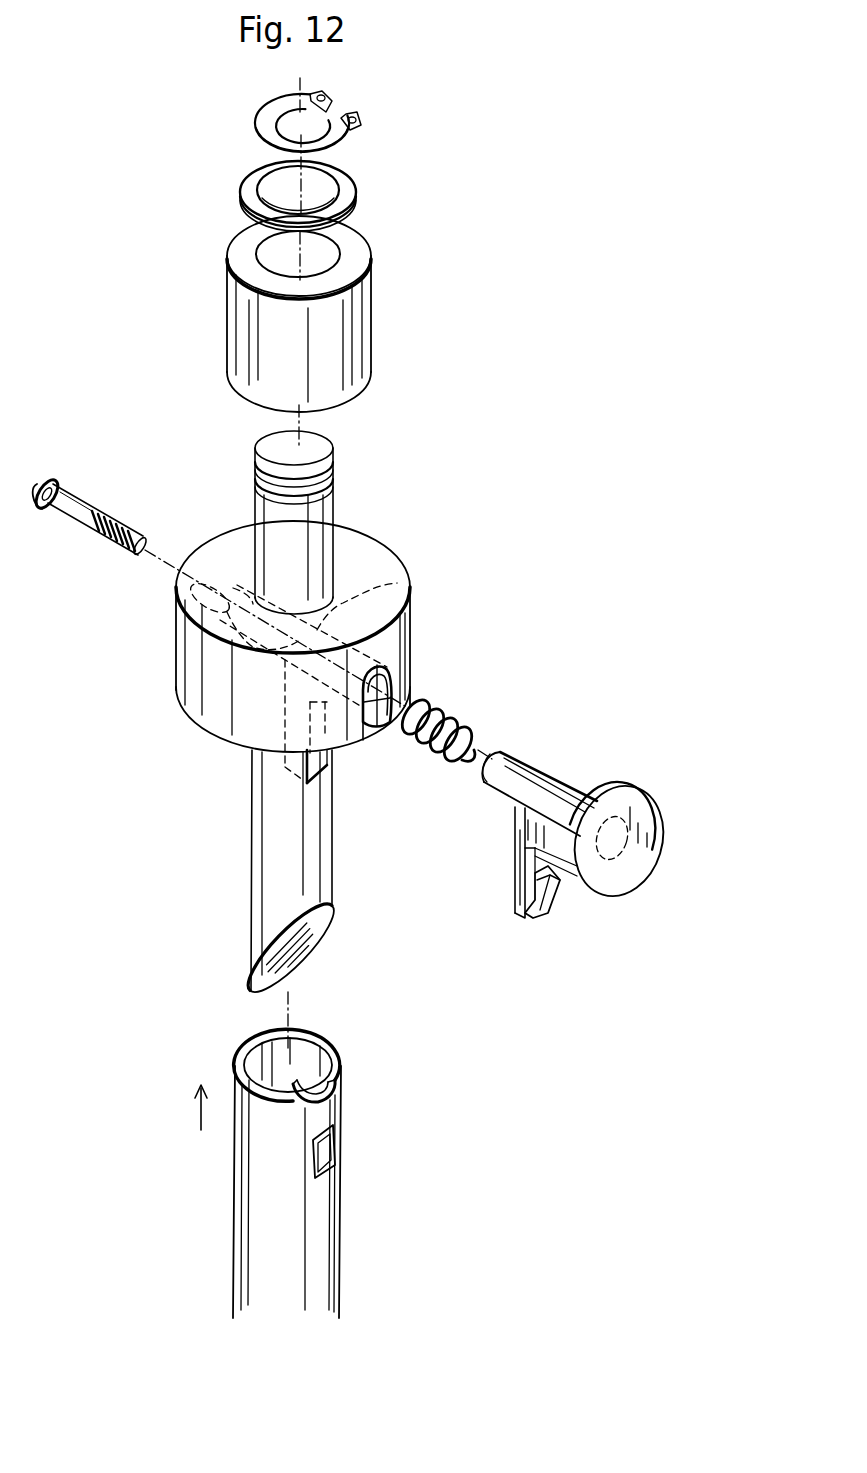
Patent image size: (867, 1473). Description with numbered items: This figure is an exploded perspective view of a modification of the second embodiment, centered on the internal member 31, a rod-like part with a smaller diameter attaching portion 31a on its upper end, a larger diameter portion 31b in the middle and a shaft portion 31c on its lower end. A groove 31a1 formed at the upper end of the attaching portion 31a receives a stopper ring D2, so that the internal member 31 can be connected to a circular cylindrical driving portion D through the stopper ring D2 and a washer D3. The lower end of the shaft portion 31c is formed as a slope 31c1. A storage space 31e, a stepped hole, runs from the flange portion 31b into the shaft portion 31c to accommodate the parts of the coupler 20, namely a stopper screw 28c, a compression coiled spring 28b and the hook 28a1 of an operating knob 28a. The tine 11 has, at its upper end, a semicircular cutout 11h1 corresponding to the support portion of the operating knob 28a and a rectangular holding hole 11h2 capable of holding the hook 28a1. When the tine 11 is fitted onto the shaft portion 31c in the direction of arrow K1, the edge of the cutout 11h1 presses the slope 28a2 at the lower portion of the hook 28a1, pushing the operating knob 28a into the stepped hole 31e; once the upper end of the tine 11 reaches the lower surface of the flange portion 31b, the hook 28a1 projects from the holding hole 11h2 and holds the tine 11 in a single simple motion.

The stopper ring D2 is at (258, 125).
The washer D3 is at (250, 187).
The circular cylindrical driving portion D is at (242, 317).
The internal member 31 is at (322, 716).
The attaching portion 31a is at (292, 522).
The groove 31a1 is at (295, 488).
The larger diameter portion 31b is at (332, 650).
The storage space 31e is at (380, 592).
The shaft portion 31c is at (323, 876).
The slope 31c1 is at (305, 945).
The screw 28c is at (78, 515).
The compression coiled spring 28b is at (453, 722).
The coupler 20 is at (579, 856).
The operating knob 28a is at (567, 858).
The hook 28a1 is at (528, 885).
The slope 28a2 is at (548, 905).
The tine 11 is at (239, 1173).
The semicircular cutout 11h1 is at (302, 1088).
The rectangular holding hole 11h2 is at (316, 1152).
The arrow K1 is at (206, 1087).